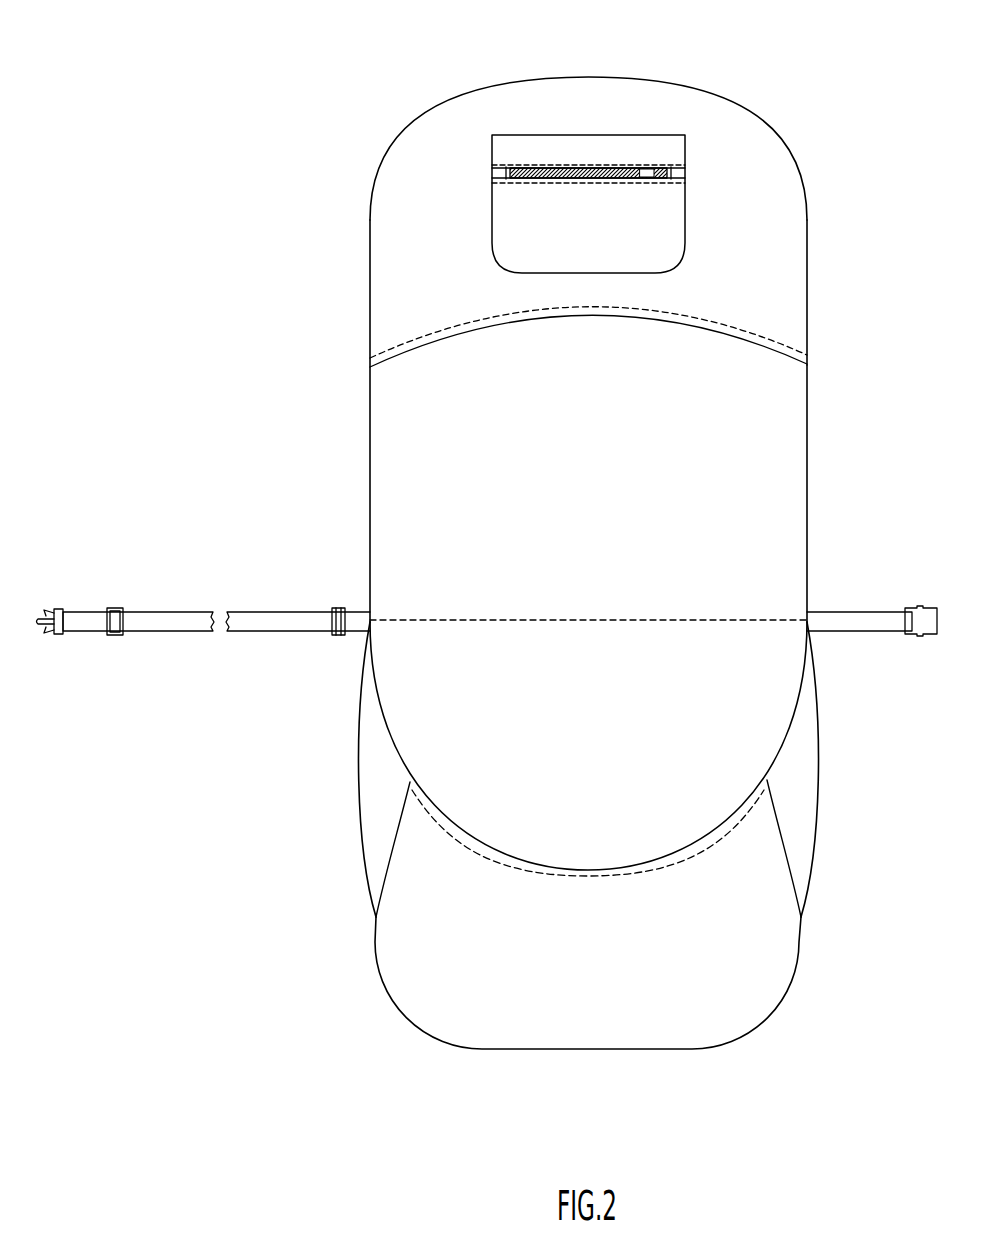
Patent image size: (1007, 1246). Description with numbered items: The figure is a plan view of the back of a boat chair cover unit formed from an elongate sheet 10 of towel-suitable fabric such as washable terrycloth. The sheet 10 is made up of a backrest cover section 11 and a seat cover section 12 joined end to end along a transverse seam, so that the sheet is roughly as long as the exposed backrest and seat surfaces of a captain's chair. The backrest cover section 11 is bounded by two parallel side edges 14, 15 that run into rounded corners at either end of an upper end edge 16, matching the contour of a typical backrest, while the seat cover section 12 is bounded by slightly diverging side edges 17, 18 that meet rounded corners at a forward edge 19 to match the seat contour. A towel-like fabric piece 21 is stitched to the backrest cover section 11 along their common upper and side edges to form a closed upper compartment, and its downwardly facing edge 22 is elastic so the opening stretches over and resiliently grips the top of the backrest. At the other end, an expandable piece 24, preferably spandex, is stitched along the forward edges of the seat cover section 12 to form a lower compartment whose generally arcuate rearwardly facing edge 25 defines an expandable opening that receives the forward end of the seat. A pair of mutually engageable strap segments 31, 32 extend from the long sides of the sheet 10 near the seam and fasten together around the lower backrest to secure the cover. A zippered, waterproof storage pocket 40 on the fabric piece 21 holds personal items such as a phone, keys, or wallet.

The elongate sheet 10 is at (487, 552).
The backrest cover section 11 is at (587, 421).
The seat cover section 12 is at (588, 749).
The side edge 14 is at (370, 513).
The side edge 15 is at (807, 523).
The upper end edge 16 is at (688, 88).
The side edge 17 is at (361, 748).
The side edge 18 is at (807, 255).
The forward edge 19 is at (730, 1032).
The towel-like fabric piece 21 is at (588, 142).
The downwardly facing edge 22 is at (456, 325).
The piece forming the lower compartment 24 is at (588, 928).
The rearwardly facing edge 25 is at (740, 815).
The strap segment 31 is at (860, 632).
The strap segment 32 is at (165, 632).
The storage pocket 40 is at (505, 228).